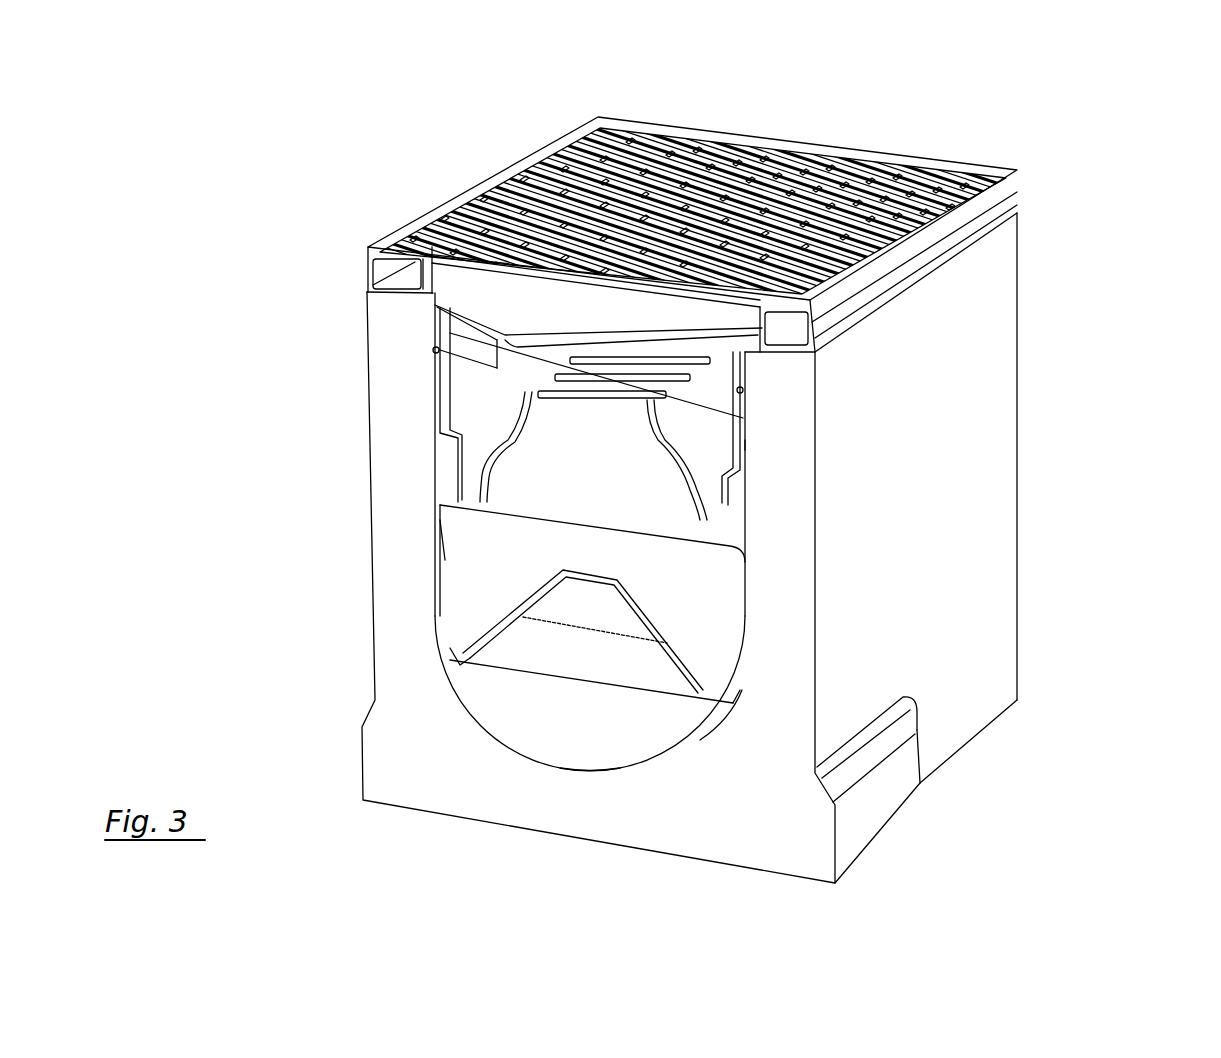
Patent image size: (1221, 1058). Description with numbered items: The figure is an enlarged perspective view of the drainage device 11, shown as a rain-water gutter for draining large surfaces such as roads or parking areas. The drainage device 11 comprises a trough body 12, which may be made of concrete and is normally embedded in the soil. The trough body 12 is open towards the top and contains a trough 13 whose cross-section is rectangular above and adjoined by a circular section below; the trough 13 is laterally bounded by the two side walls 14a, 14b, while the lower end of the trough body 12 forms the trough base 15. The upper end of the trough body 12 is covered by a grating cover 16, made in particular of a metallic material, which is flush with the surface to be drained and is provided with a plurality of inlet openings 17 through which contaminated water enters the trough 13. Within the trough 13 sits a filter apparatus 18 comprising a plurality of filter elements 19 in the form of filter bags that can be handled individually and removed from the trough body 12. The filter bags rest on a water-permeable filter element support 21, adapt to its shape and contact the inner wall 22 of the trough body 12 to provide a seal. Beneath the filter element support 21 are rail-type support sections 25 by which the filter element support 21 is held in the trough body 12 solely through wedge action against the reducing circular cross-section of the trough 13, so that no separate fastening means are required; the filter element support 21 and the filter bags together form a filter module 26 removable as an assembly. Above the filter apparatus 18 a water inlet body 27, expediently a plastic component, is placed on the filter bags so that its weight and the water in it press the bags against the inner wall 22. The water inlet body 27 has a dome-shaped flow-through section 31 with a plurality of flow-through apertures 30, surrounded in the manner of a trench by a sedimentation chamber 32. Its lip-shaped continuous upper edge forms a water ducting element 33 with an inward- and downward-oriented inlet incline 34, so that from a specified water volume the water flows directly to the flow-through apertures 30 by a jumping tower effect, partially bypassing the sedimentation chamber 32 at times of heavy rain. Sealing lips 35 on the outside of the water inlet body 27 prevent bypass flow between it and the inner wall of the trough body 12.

The drainage device 11 is at (1072, 192).
The trough body 12 is at (985, 520).
The trough 13 is at (547, 718).
The side wall 14a is at (385, 312).
The side wall 14b is at (783, 420).
The trough base 15 is at (608, 768).
The grating cover 16 is at (960, 168).
The inlet openings 17 is at (705, 185).
The filter apparatus 18 is at (720, 588).
The filter elements 19 is at (453, 530).
The filter element support 21 is at (490, 654).
The inner wall 22 is at (703, 733).
The support sections 25 is at (517, 653).
The filter module 26 is at (740, 640).
The water inlet body 27 is at (747, 445).
The flow-through apertures 30 is at (745, 334).
The flow-through section 31 is at (465, 458).
The sedimentation chamber 32 is at (705, 492).
The water ducting element 33 is at (385, 243).
The inlet incline 34 is at (433, 350).
The sealing lips 35 is at (740, 385).